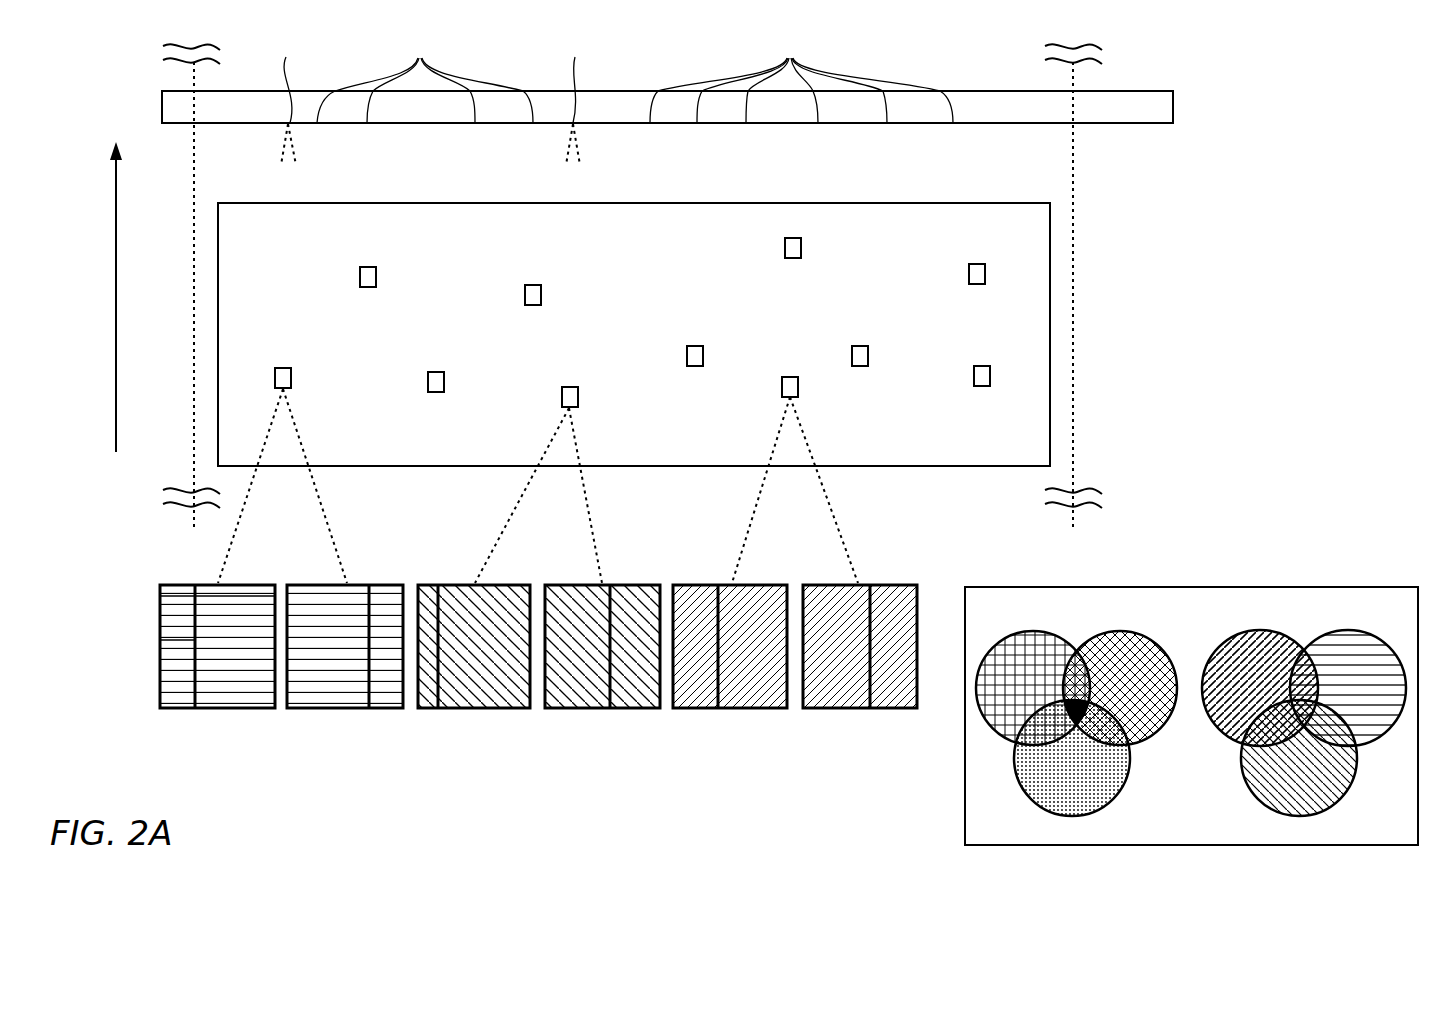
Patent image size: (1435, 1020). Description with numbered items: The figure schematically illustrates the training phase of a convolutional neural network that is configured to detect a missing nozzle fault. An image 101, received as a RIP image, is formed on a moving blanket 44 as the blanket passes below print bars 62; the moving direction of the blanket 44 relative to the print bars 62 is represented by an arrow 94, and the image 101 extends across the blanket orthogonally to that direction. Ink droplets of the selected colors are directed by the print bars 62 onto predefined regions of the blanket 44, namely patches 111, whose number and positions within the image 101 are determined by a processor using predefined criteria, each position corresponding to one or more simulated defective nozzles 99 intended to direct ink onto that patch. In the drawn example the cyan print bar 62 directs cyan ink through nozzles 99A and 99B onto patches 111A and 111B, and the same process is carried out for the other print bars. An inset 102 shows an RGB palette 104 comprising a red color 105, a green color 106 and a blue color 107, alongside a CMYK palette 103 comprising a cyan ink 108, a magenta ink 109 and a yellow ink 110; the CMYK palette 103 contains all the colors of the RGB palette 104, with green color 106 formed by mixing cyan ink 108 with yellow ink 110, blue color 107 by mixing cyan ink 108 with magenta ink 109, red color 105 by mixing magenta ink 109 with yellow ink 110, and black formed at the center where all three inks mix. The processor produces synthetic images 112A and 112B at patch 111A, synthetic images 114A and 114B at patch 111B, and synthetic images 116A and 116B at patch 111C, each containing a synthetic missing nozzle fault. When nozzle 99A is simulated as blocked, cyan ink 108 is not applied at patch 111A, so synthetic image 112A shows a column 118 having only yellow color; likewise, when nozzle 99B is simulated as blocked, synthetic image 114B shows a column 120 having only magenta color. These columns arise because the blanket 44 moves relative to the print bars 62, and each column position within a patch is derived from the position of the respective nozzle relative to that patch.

The blanket 44 is at (193, 280).
The print bar 62 is at (1175, 105).
The arrow 94 is at (116, 350).
The nozzles 99 is at (635, 76).
The nozzle 99A is at (287, 99).
The nozzle 99B is at (574, 99).
The image 101 is at (990, 203).
The inset 102 is at (1217, 587).
The CMYK palette 103 is at (1127, 581).
The RGB palette 104 is at (1309, 581).
The red color 105 is at (1260, 688).
The green color 106 is at (1348, 688).
The blue color 107 is at (1299, 758).
The cyan ink 108 is at (1033, 688).
The magenta ink 109 is at (614, 576).
The yellow ink 110 is at (135, 645).
The patches 111 is at (525, 295).
The patch 111A is at (283, 368).
The patch 111B is at (569, 387).
The patch 111C is at (790, 377).
The synthetic image 112A is at (237, 708).
The synthetic image 112B is at (318, 708).
The synthetic image 114A is at (480, 708).
The synthetic image 114B is at (575, 708).
The synthetic image 116A is at (745, 708).
The synthetic image 116B is at (832, 708).
The column 118 is at (183, 608).
The column 120 is at (610, 578).